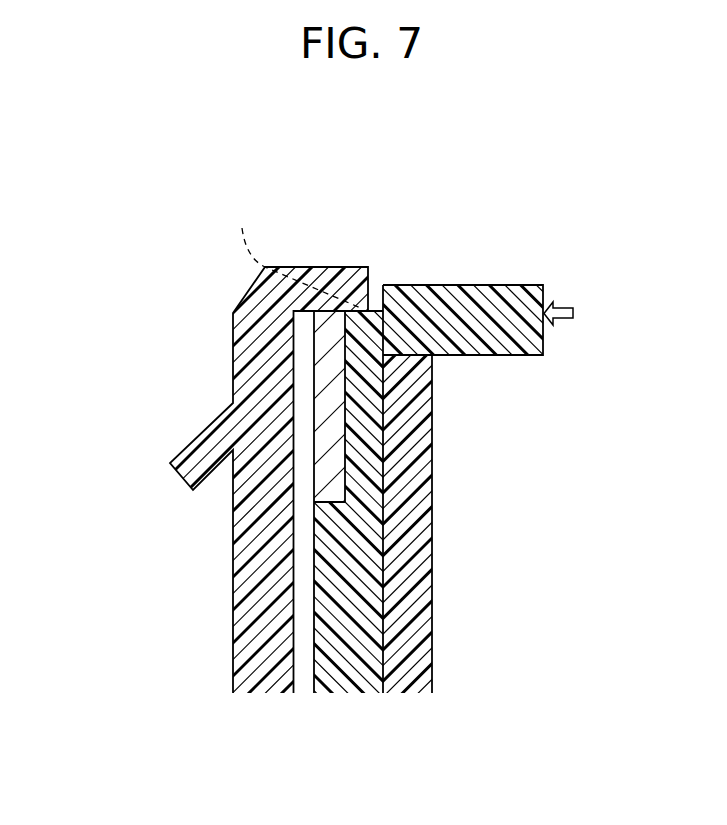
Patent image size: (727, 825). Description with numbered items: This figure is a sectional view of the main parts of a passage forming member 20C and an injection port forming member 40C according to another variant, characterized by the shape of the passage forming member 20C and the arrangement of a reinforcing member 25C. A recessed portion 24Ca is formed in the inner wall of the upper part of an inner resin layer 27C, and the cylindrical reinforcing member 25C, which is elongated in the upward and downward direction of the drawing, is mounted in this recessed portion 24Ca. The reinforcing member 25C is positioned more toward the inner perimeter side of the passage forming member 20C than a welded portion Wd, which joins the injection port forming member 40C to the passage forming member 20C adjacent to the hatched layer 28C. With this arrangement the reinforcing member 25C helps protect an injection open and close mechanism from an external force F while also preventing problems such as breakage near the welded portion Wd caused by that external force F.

The passage forming member 20C is at (432, 648).
The recessed portion 24Ca is at (336, 414).
The reinforcing member 25C is at (348, 352).
The inner resin layer 27C is at (390, 576).
The outer wall 28C is at (432, 506).
The injection port forming member 40C is at (233, 325).
The welded portion Wd is at (292, 253).
The external force F is at (563, 302).